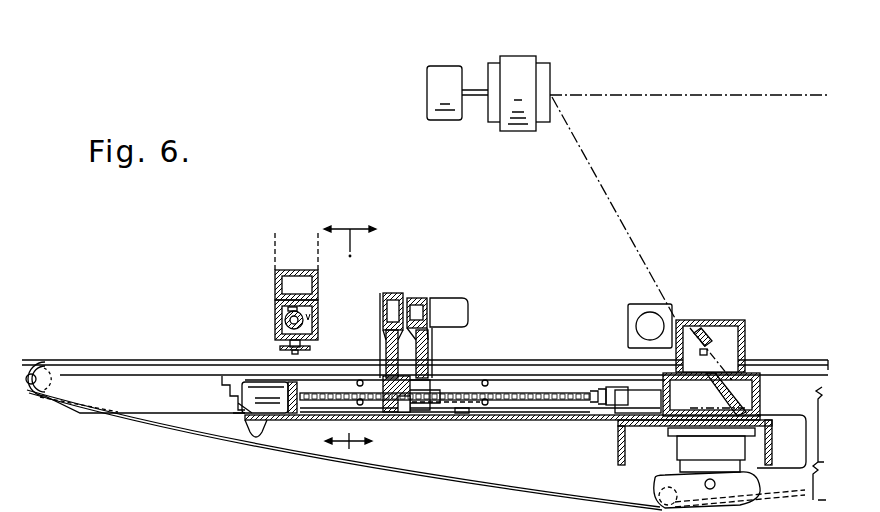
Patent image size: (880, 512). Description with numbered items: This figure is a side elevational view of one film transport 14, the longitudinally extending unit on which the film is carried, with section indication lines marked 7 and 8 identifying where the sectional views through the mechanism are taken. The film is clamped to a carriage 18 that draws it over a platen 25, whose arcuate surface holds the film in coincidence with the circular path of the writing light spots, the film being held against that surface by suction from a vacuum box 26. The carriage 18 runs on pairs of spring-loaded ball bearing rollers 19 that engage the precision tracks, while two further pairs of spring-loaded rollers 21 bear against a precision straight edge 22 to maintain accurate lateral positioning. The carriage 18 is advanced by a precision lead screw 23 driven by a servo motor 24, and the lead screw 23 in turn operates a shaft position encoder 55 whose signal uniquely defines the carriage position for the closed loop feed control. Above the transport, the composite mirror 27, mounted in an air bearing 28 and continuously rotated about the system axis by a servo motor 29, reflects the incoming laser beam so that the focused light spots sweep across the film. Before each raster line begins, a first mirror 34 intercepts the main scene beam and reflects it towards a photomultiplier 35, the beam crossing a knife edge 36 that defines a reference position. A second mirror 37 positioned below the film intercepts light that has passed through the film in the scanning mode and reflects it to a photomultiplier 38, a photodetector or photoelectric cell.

The section line 7- 7 is at (382, 336).
The section line 8- 8 is at (325, 336).
The film transport 14 is at (125, 400).
The carriage 18 is at (395, 292).
The spring-loaded ball bearing rollers 19 is at (485, 406).
The spring-loaded rollers 21 is at (462, 415).
The precision straight edge 22 is at (292, 418).
The precision lead screw 23 is at (542, 390).
The servo motor 24 is at (240, 402).
The platen 25 is at (745, 357).
The vacuum box 26 is at (748, 390).
The composite mirror 27 is at (553, 72).
The air bearing 28 is at (516, 65).
The servo motor 29 is at (445, 72).
The first mirror 34 is at (742, 322).
The photomultiplier 35 is at (632, 310).
The knife edge 36 is at (700, 335).
The second mirror 37 is at (712, 461).
The photomultiplier 38 is at (625, 407).
The shaft position encoder 55 is at (596, 394).